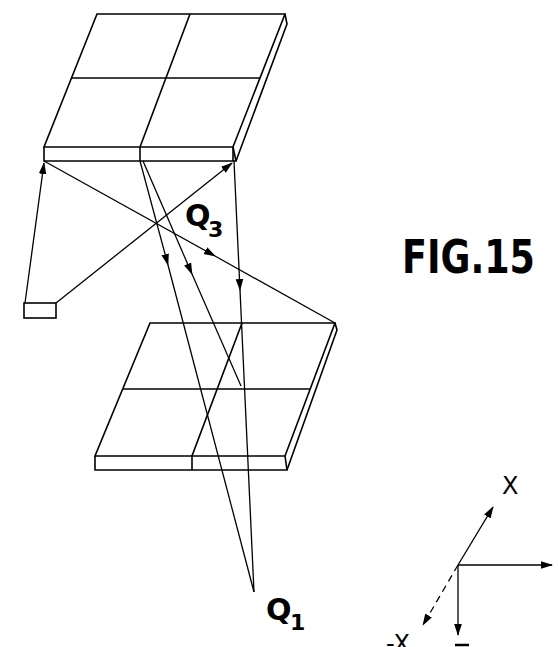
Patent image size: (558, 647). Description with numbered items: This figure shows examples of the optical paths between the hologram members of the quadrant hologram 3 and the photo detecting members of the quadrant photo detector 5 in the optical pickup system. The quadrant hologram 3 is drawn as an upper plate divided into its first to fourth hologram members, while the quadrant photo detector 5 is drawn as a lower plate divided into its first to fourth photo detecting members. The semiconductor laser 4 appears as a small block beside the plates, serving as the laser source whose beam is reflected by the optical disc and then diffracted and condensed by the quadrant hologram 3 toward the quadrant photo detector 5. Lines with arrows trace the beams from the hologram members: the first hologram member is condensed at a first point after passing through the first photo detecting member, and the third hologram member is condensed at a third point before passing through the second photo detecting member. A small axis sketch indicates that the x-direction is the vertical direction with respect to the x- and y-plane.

The quadrant hologram 3 is at (272, 68).
The semiconductor laser 4 is at (33, 318).
The quadrant photo detector 5 is at (298, 353).